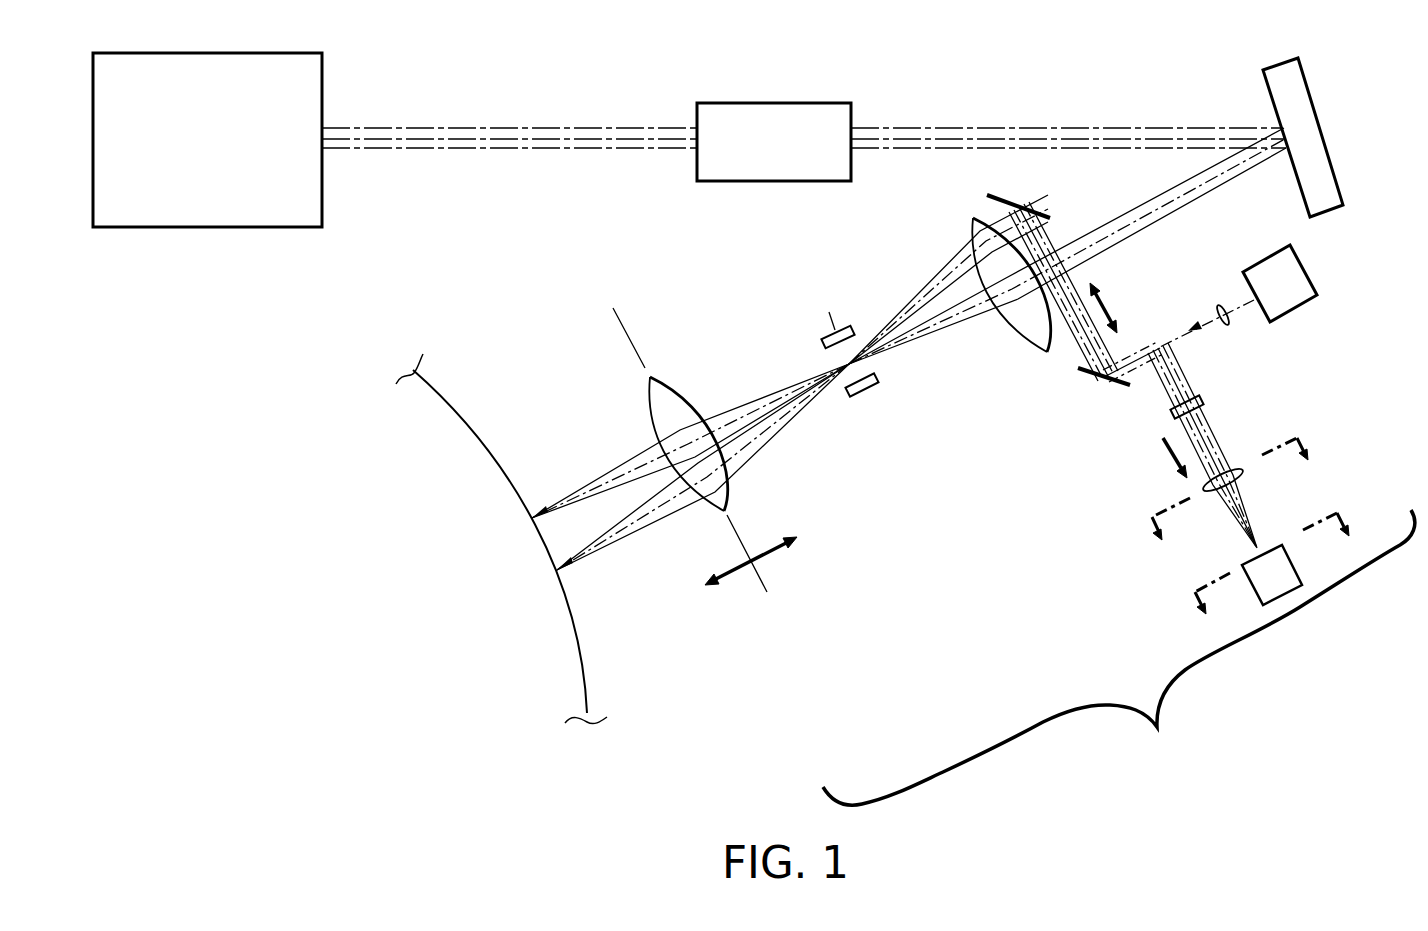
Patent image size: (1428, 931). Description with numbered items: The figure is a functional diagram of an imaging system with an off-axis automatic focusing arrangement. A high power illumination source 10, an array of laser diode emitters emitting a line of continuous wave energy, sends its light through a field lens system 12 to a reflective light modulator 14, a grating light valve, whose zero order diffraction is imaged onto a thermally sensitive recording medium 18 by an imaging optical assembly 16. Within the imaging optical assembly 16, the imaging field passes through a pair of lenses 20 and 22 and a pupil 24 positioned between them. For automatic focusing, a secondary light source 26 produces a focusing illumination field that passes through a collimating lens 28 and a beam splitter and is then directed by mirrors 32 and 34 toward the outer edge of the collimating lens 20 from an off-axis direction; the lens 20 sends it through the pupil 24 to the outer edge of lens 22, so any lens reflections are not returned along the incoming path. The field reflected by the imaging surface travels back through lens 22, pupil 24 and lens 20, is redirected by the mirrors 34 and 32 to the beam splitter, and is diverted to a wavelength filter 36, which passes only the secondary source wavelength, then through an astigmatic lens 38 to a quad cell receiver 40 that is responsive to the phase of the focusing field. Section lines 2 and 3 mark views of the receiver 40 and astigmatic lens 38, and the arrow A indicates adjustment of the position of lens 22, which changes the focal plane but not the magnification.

The high power illumination source 10 is at (211, 152).
The field lens system 12 is at (783, 155).
The light modulator 14 is at (1289, 63).
The imaging optical assembly 16 is at (1119, 657).
The thermally sensitive recording medium 18 is at (430, 392).
The optical lens 20 is at (1040, 347).
The optical lens 22 is at (672, 383).
The pupil 24 is at (866, 397).
The secondary light source 26 is at (1300, 282).
The collimating lens 28 is at (1222, 306).
The mirror 32 is at (1078, 372).
The mirror 34 is at (1001, 195).
The wavelength filter 36 is at (1200, 400).
The astigmatic lens 38 is at (1238, 470).
The quad cell receiver 40 is at (1271, 553).
The section line 2- 2 is at (1237, 503).
The section line 3- 3 is at (1278, 579).
The lens position adjustment A is at (705, 459).